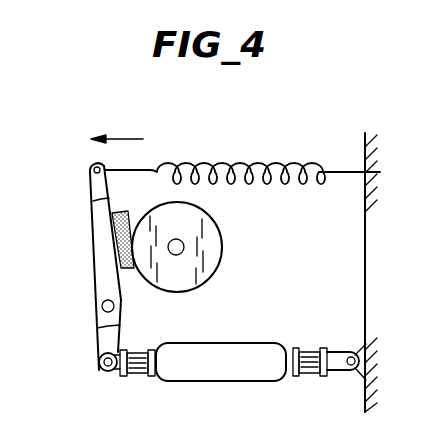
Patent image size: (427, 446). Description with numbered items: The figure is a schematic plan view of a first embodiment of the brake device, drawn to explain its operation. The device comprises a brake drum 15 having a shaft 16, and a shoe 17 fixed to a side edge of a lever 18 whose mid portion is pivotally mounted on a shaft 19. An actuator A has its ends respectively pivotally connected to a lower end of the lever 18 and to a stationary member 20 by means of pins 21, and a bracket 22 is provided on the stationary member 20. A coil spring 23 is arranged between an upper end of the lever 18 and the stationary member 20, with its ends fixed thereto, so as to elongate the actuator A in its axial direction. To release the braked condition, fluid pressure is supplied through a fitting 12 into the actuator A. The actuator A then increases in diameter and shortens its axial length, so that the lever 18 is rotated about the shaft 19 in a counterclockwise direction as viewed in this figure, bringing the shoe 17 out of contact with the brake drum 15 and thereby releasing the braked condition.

The fitting 12 is at (338, 345).
The brake drum 15 is at (224, 232).
The shaft 16 is at (185, 250).
The shoe 17 is at (126, 272).
The lever 18 is at (90, 226).
The shaft 19 is at (101, 306).
The stationary member 20 is at (365, 259).
The pins 21 is at (104, 382).
The bracket 22 is at (355, 374).
The coil spring 23 is at (256, 164).
The actuator A is at (233, 388).